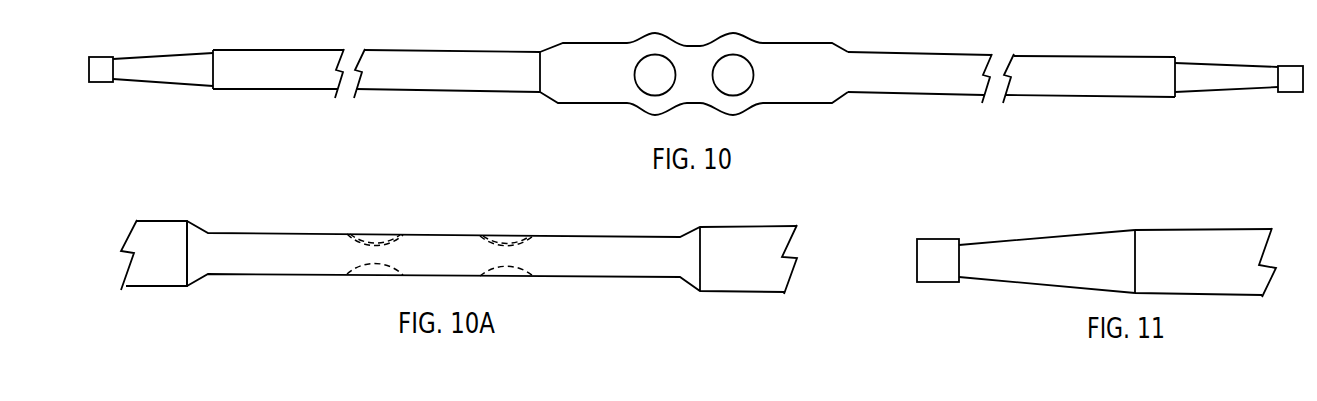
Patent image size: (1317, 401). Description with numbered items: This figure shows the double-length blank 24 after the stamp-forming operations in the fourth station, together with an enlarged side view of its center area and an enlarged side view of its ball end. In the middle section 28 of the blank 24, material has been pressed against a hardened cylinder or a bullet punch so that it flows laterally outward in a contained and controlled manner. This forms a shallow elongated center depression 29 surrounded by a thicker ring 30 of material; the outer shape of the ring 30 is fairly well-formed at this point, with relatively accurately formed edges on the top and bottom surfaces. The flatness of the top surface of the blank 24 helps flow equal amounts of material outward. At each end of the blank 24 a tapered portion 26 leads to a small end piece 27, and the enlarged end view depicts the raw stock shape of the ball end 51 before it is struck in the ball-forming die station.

In FIG. 10, the blank 24 is at (694, 76).
In FIG. 10A, the blank 24 is at (209, 192).
In FIG. 11, the blank 24 is at (964, 202).
In FIG. 10, the tapered end portion 26 is at (162, 60).
In FIG. 11, the tapered end portion 26 is at (1023, 244).
In FIG. 10, the end tab 27 is at (100, 58).
In FIG. 11, the end tab 27 is at (940, 243).
In FIG. 10, the middle section 28 is at (583, 54).
In FIG. 10A, the middle section 28 is at (162, 220).
In FIG. 10, the center depression 29 is at (648, 65).
In FIG. 10A, the center depression 29 is at (377, 243).
In FIG. 10, the ring 30 is at (730, 44).
In FIG. 10A, the ball end 51 is at (345, 235).